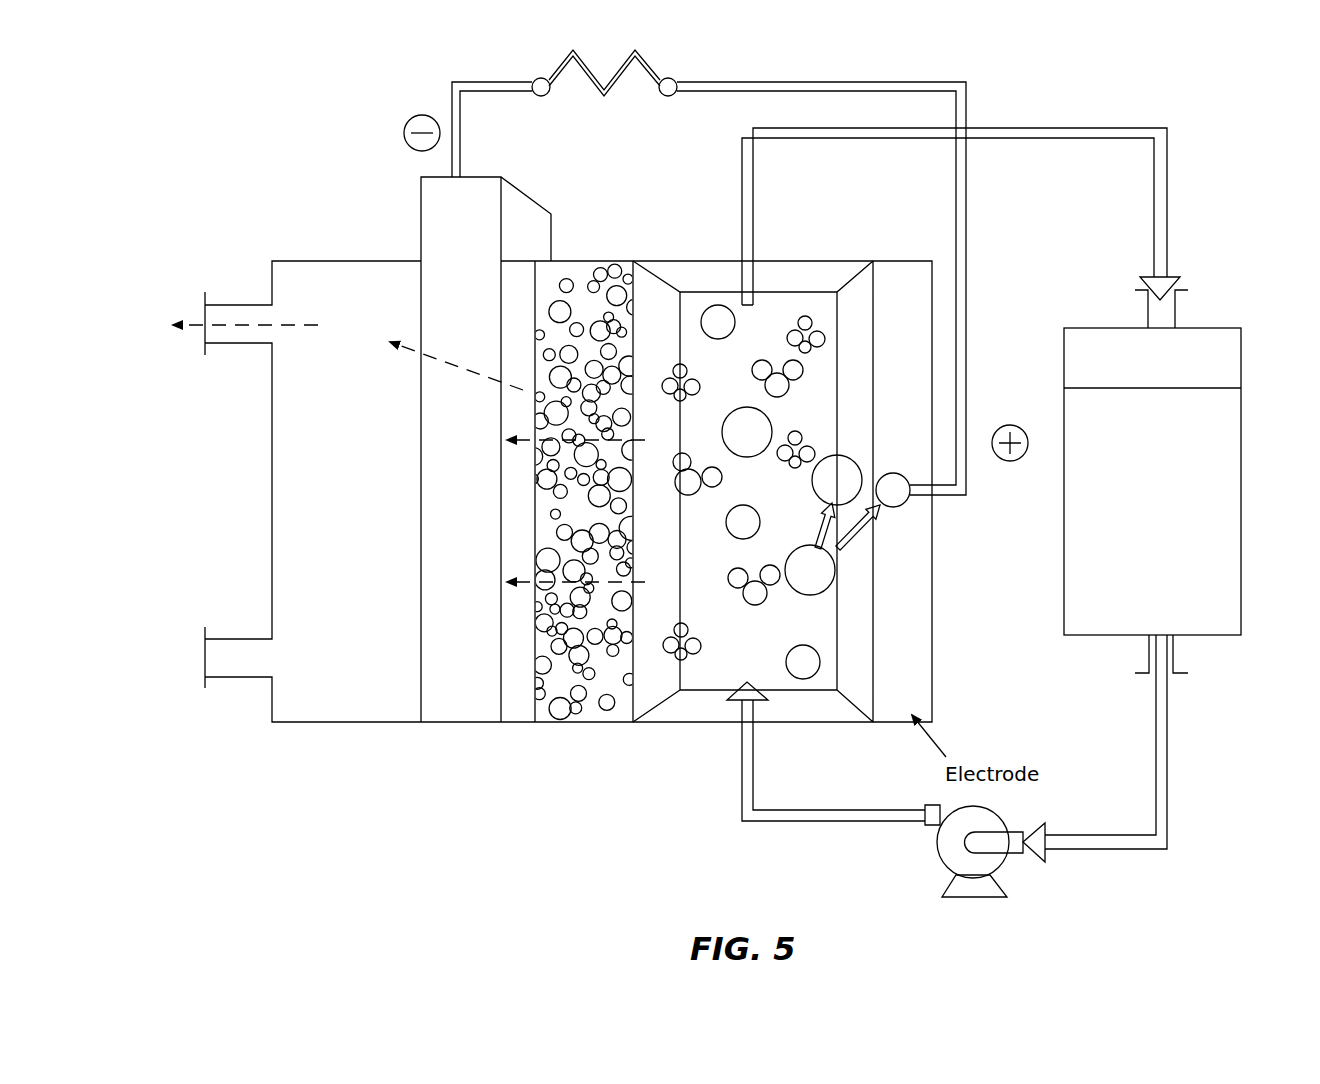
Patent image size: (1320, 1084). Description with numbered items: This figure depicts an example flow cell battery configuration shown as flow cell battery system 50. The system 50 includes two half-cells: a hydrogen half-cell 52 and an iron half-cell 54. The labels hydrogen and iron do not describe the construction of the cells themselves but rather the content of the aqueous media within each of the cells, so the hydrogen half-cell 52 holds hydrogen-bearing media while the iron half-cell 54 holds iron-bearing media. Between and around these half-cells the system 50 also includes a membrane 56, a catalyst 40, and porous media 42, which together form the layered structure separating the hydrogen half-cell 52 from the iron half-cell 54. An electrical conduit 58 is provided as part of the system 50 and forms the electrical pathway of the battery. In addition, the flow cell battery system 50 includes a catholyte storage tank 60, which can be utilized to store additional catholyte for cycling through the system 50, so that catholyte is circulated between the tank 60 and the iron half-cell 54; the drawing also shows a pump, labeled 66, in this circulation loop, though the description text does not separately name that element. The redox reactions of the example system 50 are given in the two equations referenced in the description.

The flow cell battery system 50 is at (1198, 85).
The hydrogen half-cell 52 is at (346, 260).
The iron half-cell 54 is at (808, 268).
The membrane 56 is at (572, 723).
The electrical conduit 58 is at (718, 82).
The catholyte storage tank 60 is at (1211, 639).
The pump 66 is at (972, 898).
The catalyst 40 is at (510, 723).
The porous media 42 is at (452, 708).